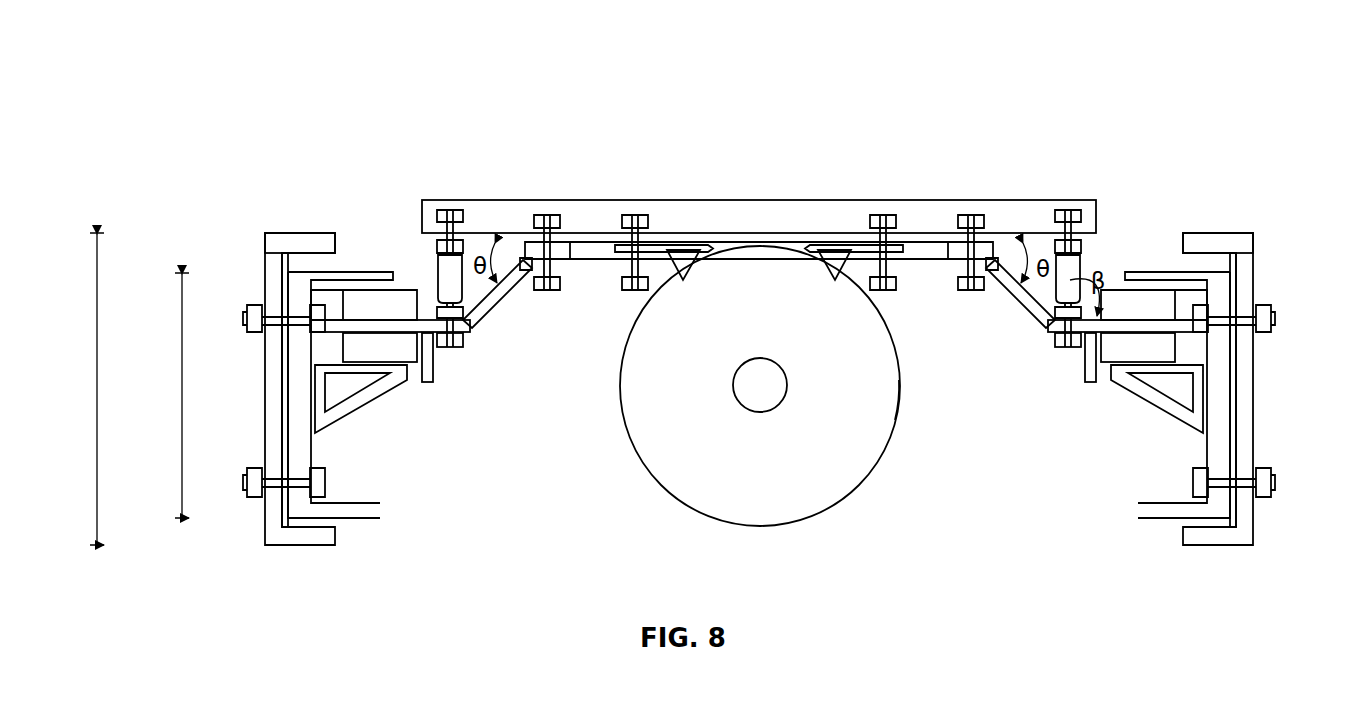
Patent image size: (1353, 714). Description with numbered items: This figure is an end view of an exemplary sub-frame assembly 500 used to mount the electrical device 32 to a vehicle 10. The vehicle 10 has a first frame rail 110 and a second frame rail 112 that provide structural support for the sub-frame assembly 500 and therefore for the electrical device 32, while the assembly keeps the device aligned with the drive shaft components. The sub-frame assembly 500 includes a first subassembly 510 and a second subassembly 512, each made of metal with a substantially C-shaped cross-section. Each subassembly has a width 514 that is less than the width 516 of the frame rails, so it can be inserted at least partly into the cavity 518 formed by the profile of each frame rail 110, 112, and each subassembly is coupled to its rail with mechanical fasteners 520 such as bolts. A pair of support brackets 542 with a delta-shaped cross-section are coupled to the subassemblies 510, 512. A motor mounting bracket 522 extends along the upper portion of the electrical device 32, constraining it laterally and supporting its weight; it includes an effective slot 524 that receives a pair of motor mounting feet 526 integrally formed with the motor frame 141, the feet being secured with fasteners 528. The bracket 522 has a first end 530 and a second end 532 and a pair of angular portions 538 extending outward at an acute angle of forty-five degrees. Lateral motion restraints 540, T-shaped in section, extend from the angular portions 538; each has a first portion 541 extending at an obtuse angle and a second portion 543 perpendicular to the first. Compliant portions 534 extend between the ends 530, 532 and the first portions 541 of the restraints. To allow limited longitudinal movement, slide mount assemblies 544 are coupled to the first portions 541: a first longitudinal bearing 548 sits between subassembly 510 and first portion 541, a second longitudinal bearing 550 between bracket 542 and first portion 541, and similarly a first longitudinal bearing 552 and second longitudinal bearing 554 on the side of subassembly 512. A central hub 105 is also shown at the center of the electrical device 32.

The vehicle 10 is at (1038, 68).
The sub-frame assembly 500 is at (309, 124).
The first subassembly 510 is at (305, 515).
The second subassembly 512 is at (1205, 515).
The first frame rail 110 is at (290, 243).
The second frame rail 112 is at (1228, 243).
The cavity 518 is at (282, 262).
The first longitudinal bearing 548 is at (347, 312).
The slide mount assembly 544 is at (404, 287).
The first longitudinal bearing 552 is at (1148, 300).
The second longitudinal bearing 550 is at (355, 343).
The second longitudinal bearing 554 is at (1157, 350).
The support bracket 542 is at (350, 424).
The lateral motion restraint 540 is at (431, 388).
The first portion 541 is at (472, 326).
The second portion 543 is at (433, 350).
The angular portion 538 is at (507, 267).
The first end 530 is at (437, 210).
The second end 532 is at (1085, 210).
The compliant portion 534 is at (488, 302).
The motor mounting bracket 522 is at (589, 227).
The effective slot 524 is at (925, 245).
The motor mounting foot 526 is at (686, 256).
The fastener 528 is at (887, 213).
The electrical device 32 is at (881, 345).
The motor frame 141 is at (900, 392).
The hub 105 is at (760, 356).
The mechanical fastener 520 is at (250, 487).
The width 516 is at (97, 370).
The width 514 is at (182, 400).